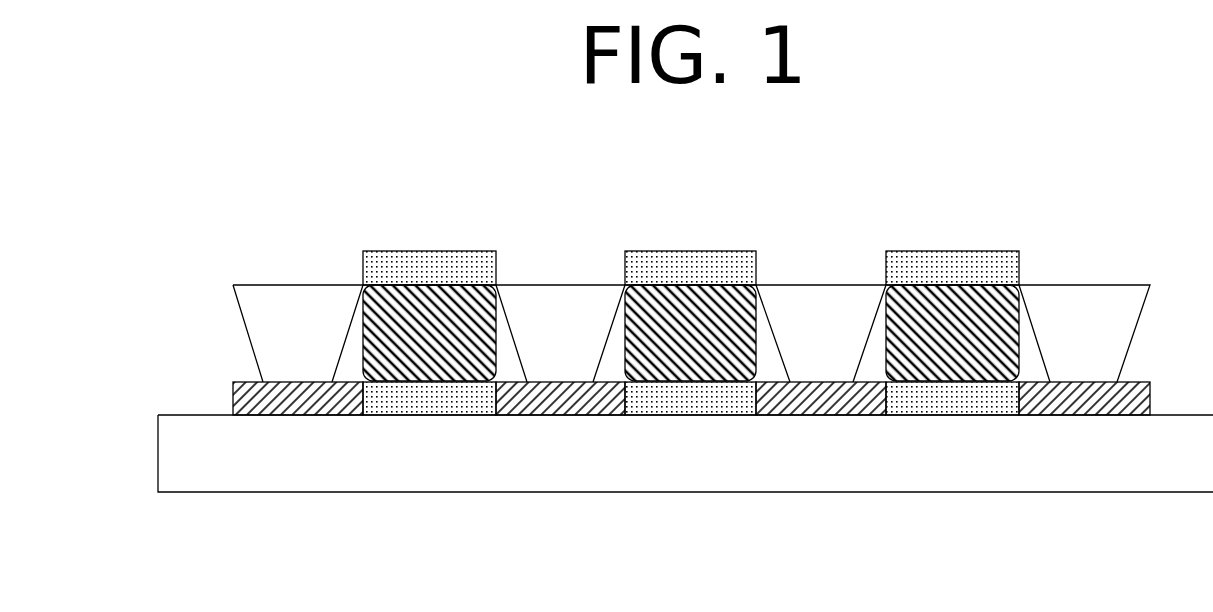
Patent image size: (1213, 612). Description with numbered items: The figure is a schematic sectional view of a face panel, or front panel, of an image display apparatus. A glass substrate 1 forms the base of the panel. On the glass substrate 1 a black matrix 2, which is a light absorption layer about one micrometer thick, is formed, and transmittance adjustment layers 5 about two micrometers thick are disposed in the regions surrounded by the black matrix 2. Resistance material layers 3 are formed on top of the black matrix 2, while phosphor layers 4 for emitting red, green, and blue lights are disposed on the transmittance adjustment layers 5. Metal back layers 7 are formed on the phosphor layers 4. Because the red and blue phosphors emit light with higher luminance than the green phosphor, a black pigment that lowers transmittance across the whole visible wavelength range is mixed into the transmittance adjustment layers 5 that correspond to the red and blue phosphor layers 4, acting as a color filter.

The glass substrate 1 is at (775, 458).
The black matrix 2 is at (297, 401).
The resistance material layer 3 is at (1078, 318).
The phosphor layer 4 is at (427, 318).
The transmittance adjustment layer 5 is at (447, 408).
The metal back layer 7 is at (676, 266).